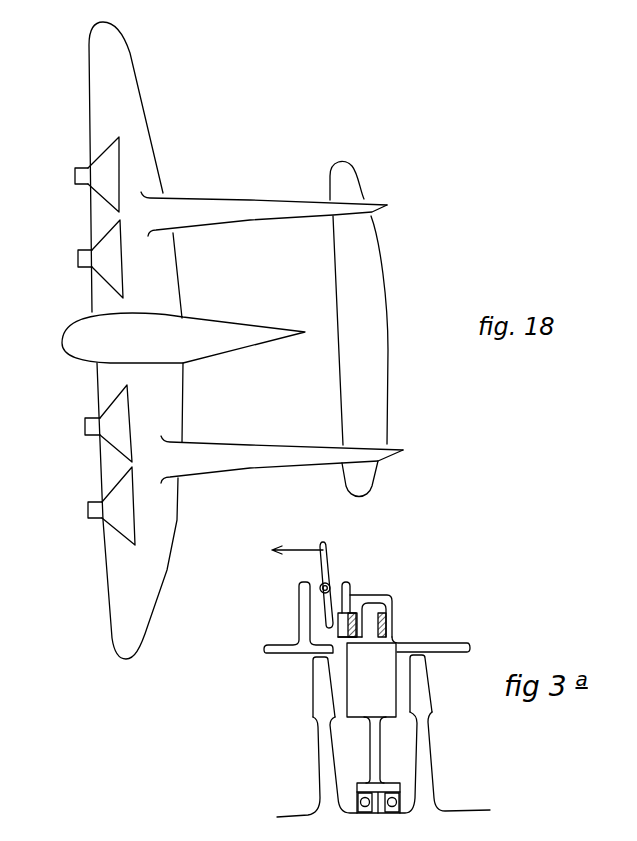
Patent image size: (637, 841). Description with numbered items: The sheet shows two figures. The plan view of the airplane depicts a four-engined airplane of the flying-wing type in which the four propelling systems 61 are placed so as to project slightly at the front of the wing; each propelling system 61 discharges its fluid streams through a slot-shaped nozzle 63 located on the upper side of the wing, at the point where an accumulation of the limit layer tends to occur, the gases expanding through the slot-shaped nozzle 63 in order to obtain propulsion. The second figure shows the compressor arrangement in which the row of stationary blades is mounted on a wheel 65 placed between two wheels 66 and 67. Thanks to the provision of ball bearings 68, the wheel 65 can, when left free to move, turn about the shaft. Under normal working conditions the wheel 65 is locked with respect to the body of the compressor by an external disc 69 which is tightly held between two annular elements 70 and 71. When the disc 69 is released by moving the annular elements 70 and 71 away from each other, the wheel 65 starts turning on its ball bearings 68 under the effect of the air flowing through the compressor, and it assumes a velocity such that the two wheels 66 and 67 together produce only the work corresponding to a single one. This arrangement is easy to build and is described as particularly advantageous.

In FIG. 18, the propelling system 61 is at (92, 255).
In FIG. 18, the slot-shaped nozzle 63 is at (123, 260).
In FIG. 3A, the wheel 65 is at (371, 713).
In FIG. 3A, the wheel 66 is at (323, 700).
In FIG. 3A, the wheel 67 is at (421, 700).
In FIG. 3A, the ball bearings 68 is at (360, 796).
In FIG. 3A, the external disc 69 is at (367, 620).
In FIG. 3A, the annular element 70 is at (385, 628).
In FIG. 3A, the annular element 71 is at (343, 623).